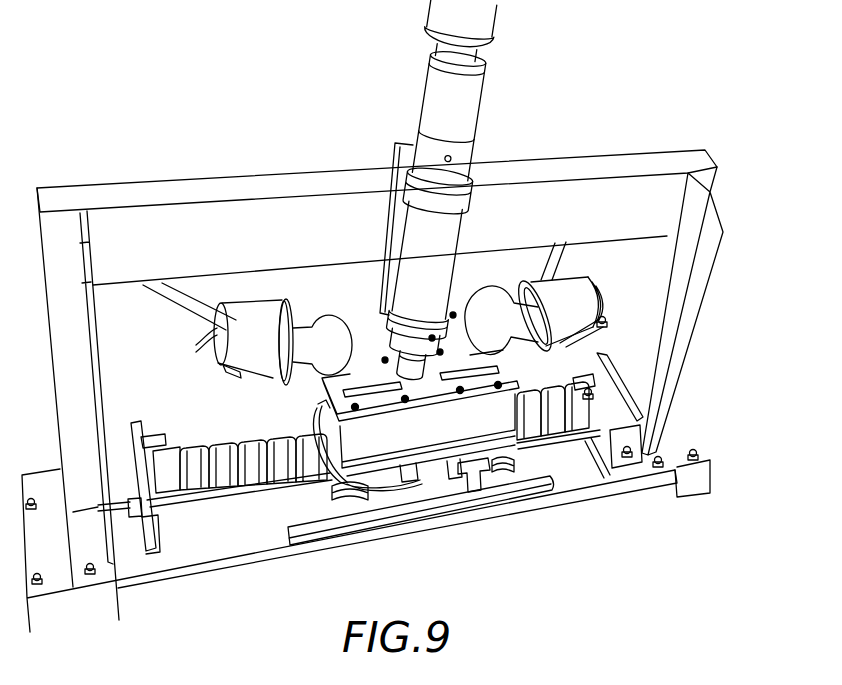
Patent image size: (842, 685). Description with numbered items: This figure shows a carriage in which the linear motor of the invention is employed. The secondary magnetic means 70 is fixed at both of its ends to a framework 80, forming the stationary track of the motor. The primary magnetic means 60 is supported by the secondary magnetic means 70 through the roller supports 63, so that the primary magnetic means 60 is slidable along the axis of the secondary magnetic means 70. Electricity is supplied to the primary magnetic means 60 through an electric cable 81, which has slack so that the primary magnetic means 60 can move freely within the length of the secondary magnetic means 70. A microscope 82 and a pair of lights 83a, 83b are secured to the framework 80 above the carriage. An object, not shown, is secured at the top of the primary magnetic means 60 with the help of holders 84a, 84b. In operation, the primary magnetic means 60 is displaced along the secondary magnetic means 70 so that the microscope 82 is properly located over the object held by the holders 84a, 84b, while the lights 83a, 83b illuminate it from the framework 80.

The primary magnetic means 60 is at (472, 475).
The roller supports 63 is at (337, 502).
The secondary magnetic means 70 is at (228, 441).
The framework 80 is at (673, 387).
The electric cable 81 is at (397, 500).
The microscope 82 is at (477, 115).
The light 83a is at (330, 318).
The light 83b is at (470, 300).
The holder 84a is at (367, 357).
The holder 84b is at (507, 365).